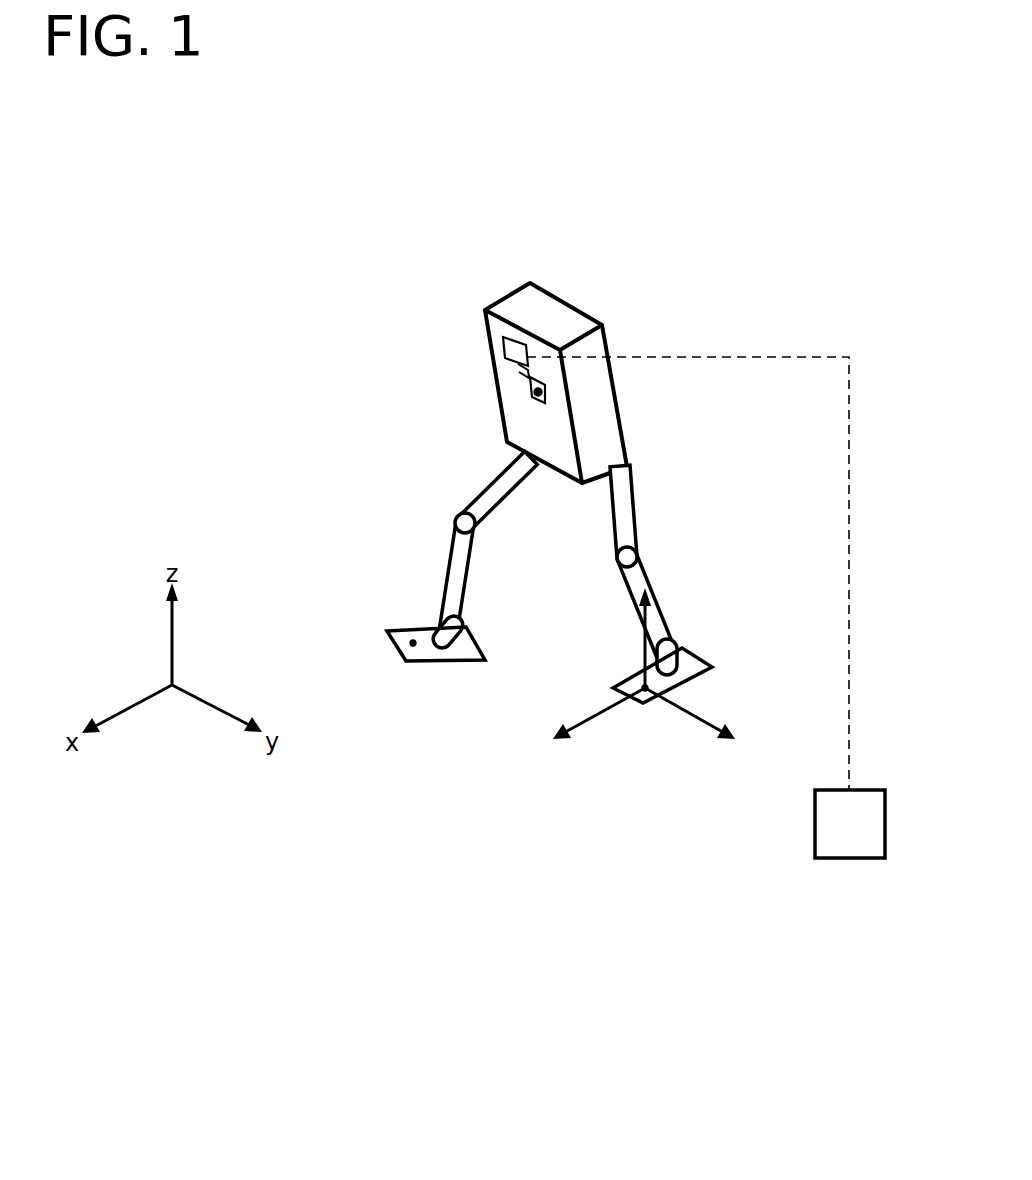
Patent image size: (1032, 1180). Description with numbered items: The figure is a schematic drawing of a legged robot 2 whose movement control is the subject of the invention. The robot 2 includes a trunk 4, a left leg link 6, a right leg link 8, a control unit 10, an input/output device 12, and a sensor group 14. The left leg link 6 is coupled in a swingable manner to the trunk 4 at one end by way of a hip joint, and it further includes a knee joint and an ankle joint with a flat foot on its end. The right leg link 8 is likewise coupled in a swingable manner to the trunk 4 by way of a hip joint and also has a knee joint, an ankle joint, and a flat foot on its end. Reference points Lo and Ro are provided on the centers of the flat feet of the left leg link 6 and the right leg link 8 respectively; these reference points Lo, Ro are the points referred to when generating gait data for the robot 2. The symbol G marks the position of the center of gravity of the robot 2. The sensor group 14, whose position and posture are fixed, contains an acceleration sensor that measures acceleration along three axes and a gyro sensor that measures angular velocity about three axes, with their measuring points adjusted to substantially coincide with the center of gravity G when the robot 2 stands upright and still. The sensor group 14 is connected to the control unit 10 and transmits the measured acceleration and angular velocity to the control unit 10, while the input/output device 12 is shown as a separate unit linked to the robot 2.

The robot 2 is at (613, 241).
The trunk 4 is at (621, 396).
The left leg link 6 is at (636, 508).
The right leg link 8 is at (503, 507).
The control unit 10 is at (500, 340).
The input/output device 12 is at (832, 858).
The sensor group 14 is at (566, 395).
The center of gravity G is at (536, 392).
The reference point Ro is at (413, 643).
The reference point Lo is at (648, 688).